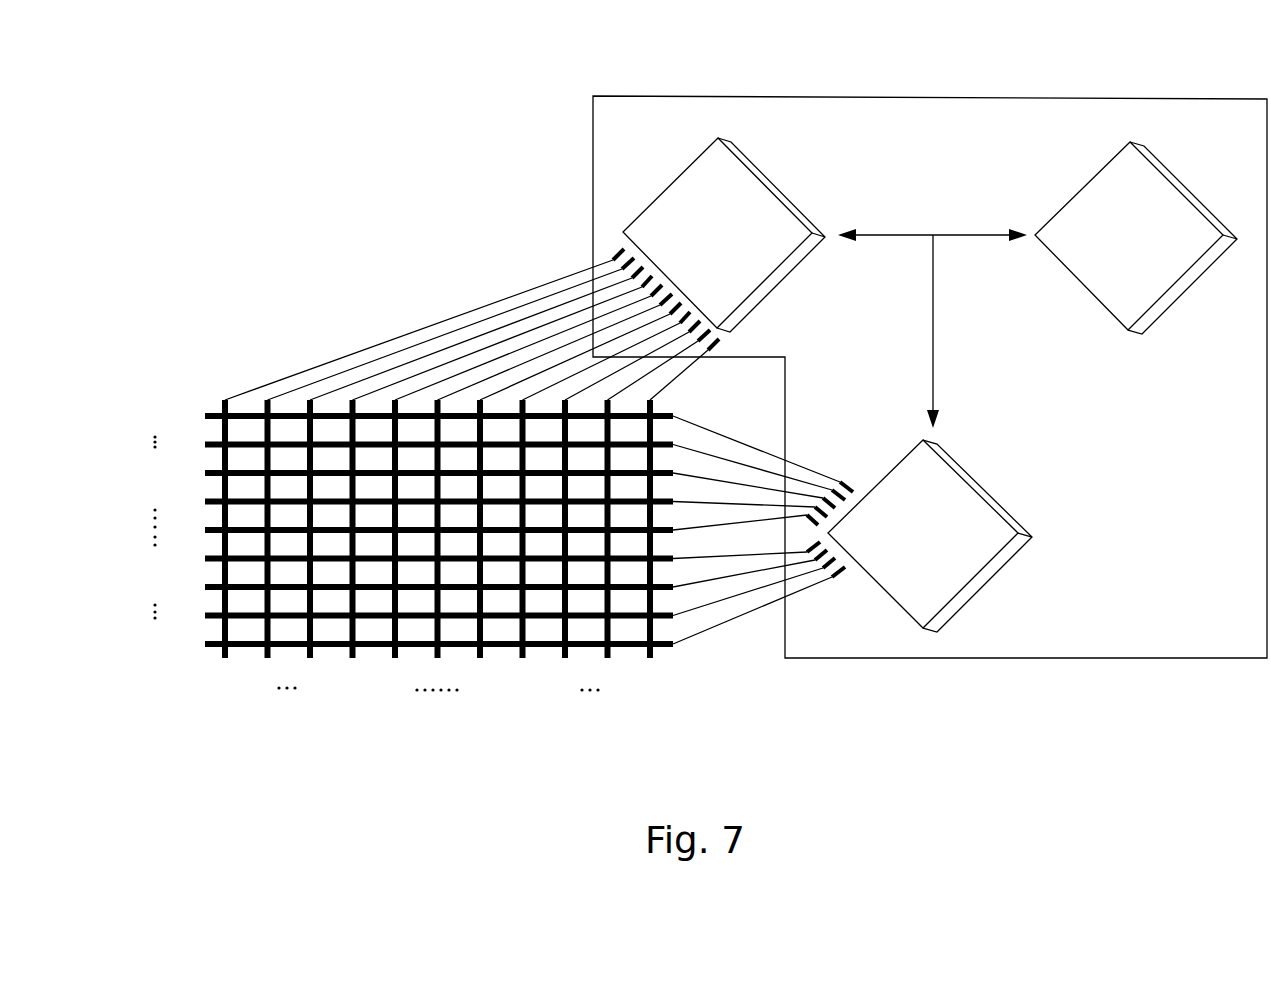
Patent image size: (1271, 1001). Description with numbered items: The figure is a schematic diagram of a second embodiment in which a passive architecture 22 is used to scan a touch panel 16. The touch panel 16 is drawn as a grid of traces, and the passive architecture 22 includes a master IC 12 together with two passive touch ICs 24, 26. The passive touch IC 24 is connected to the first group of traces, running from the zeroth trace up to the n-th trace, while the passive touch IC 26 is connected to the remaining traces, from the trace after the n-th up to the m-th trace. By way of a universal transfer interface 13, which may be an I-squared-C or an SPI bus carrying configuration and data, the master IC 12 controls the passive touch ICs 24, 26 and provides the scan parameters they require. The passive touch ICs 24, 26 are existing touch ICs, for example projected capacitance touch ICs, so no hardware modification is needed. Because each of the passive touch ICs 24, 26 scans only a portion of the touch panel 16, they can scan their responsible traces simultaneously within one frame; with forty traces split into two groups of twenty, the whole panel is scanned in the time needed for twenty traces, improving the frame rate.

The master IC 12 is at (1087, 182).
The universal transfer interface 13 is at (982, 236).
The touch panel 16 is at (201, 373).
The passive architecture 22 is at (933, 98).
The passive touch IC 24 is at (975, 480).
The passive touch IC 26 is at (672, 180).